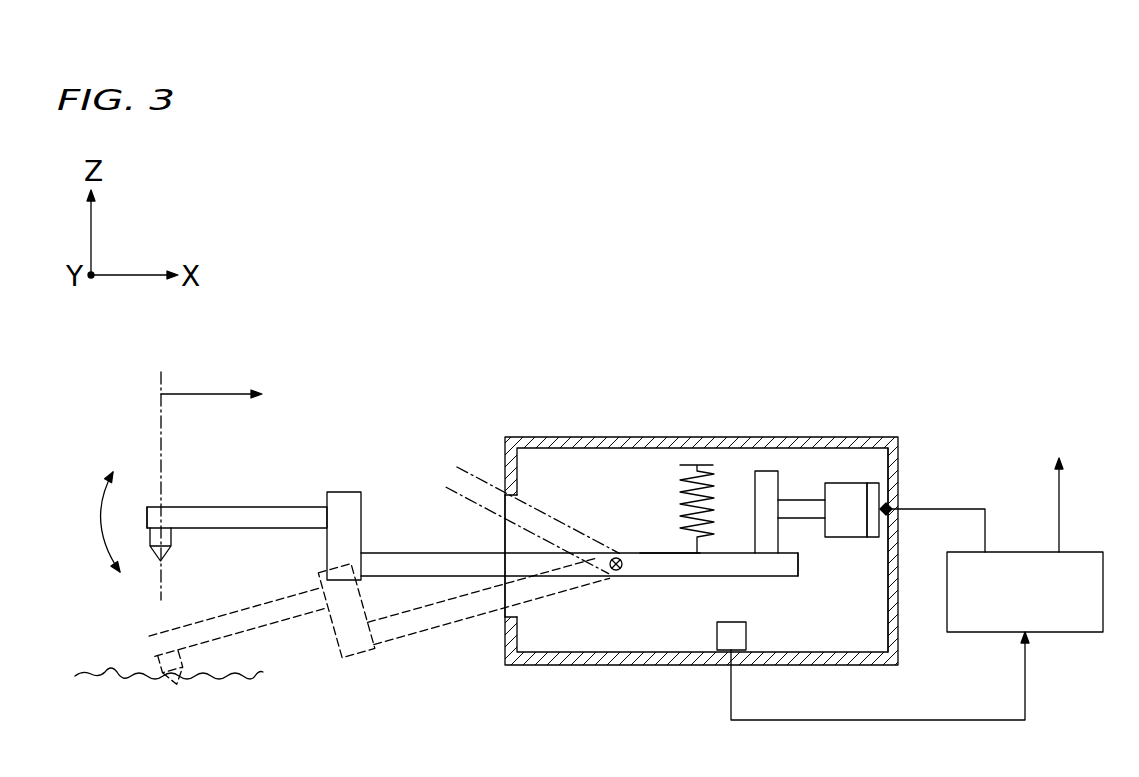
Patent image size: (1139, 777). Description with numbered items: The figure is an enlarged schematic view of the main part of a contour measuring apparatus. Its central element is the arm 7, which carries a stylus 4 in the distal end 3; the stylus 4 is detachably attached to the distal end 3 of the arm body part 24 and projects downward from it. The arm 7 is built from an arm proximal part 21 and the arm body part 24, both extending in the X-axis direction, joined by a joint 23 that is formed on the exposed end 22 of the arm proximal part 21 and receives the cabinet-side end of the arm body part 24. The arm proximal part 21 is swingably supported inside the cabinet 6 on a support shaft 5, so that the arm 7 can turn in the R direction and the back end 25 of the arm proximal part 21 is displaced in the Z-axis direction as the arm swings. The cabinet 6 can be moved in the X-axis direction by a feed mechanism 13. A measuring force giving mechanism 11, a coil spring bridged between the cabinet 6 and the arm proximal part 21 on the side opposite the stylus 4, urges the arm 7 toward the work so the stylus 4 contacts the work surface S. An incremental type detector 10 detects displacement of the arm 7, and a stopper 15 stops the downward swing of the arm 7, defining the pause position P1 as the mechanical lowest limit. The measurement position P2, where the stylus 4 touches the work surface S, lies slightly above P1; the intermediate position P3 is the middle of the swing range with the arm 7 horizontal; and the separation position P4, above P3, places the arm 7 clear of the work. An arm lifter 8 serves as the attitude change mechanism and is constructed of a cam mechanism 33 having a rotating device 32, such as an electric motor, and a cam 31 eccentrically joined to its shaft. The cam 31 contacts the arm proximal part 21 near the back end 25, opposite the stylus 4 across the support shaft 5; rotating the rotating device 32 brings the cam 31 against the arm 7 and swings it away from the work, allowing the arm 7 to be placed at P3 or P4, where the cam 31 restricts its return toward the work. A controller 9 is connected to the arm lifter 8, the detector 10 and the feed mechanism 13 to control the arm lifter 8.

The distal end 3 is at (155, 504).
The stylus 4 is at (167, 535).
The support shaft 5 is at (621, 569).
The cabinet 6 is at (626, 438).
The arm 7 is at (272, 507).
The arm lifter 8 is at (873, 476).
The controller 9 is at (1032, 601).
The detector 10 is at (717, 632).
The measuring force giving mechanism 11 is at (680, 493).
The feed mechanism 13 is at (1071, 448).
The stopper 15 is at (525, 605).
The arm proximal part 21 is at (648, 553).
The exposed end 22 is at (392, 563).
The joint 23 is at (335, 543).
The arm body part 24 is at (213, 507).
The back end 25 is at (786, 577).
The cam 31 is at (768, 484).
The rotating device 32 is at (843, 487).
The cam mechanism 33 is at (890, 437).
The R direction R is at (101, 517).
The work surface S is at (160, 678).
The pause position P1 is at (488, 620).
The measurement position P2 is at (150, 644).
The intermediate position P3 is at (141, 512).
The separation position P4 is at (487, 492).